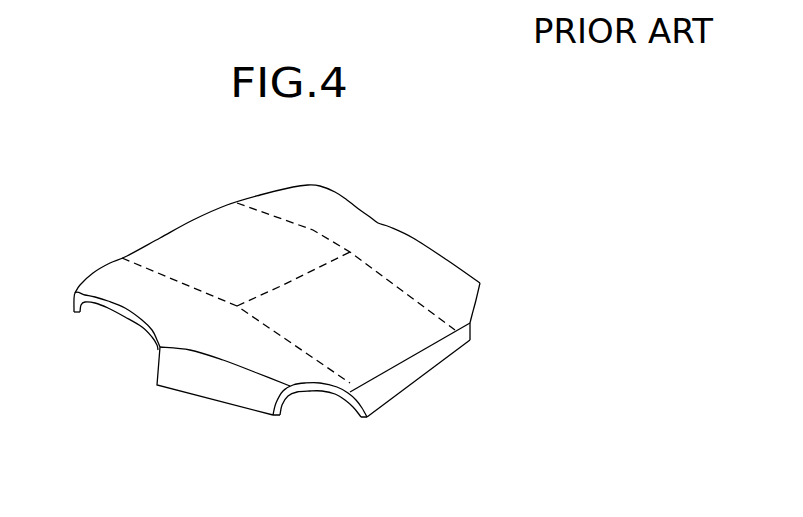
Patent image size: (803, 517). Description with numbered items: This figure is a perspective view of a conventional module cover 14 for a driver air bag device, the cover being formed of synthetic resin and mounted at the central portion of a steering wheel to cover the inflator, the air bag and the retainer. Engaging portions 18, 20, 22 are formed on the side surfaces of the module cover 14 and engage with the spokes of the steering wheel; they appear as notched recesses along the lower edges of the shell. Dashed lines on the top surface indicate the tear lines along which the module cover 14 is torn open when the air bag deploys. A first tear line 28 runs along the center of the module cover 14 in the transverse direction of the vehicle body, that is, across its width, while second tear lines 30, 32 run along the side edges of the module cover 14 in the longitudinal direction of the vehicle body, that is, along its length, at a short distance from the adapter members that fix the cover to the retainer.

The module cover 14 is at (431, 218).
The engaging portion 18 is at (105, 310).
The engaging portion 20 is at (330, 405).
The engaging portion 22 is at (476, 303).
The first tear line 28 is at (283, 285).
The second tear line 30 is at (313, 230).
The second tear line 32 is at (158, 272).